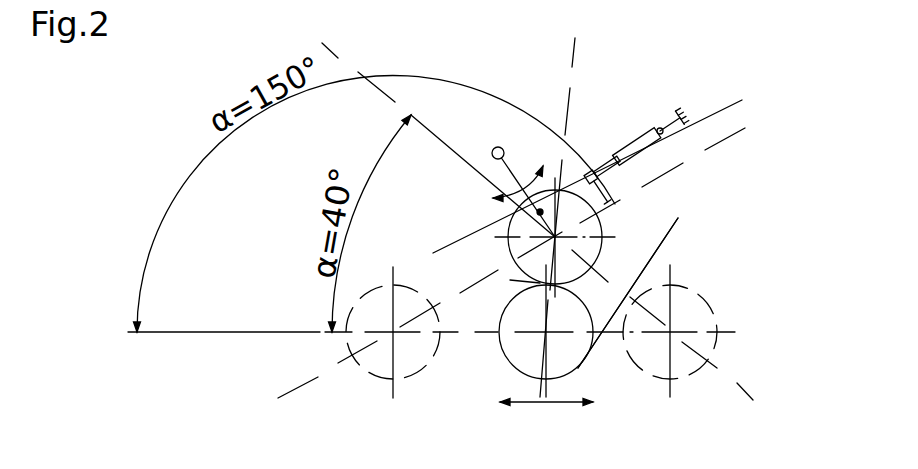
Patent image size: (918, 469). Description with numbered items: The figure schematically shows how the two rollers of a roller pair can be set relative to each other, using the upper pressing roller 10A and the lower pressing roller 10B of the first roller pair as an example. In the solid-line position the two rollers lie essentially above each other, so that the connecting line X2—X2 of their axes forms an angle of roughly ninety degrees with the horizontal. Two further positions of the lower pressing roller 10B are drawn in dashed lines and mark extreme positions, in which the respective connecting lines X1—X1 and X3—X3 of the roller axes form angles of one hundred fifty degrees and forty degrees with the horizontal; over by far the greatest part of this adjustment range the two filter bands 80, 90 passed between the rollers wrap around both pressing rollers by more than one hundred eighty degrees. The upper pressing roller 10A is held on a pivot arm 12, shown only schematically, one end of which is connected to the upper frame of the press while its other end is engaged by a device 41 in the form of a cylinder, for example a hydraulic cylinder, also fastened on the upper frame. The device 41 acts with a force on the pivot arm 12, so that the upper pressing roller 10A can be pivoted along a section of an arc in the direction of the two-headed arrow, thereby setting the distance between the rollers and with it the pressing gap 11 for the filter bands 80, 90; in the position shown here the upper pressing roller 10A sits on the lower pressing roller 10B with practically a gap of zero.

The upper pressing roller 10A is at (616, 181).
The lower pressing roller 10B is at (582, 364).
The roll gap (nip) 11 is at (510, 280).
The pivot arm 12 is at (512, 200).
The device 41 is at (638, 135).
The filter band 80 is at (657, 253).
The filter band 90 is at (628, 293).
The connecting line X1— X1 is at (520, 276).
The connecting line X2— X2 is at (546, 223).
The connecting line X3— X3 is at (541, 223).